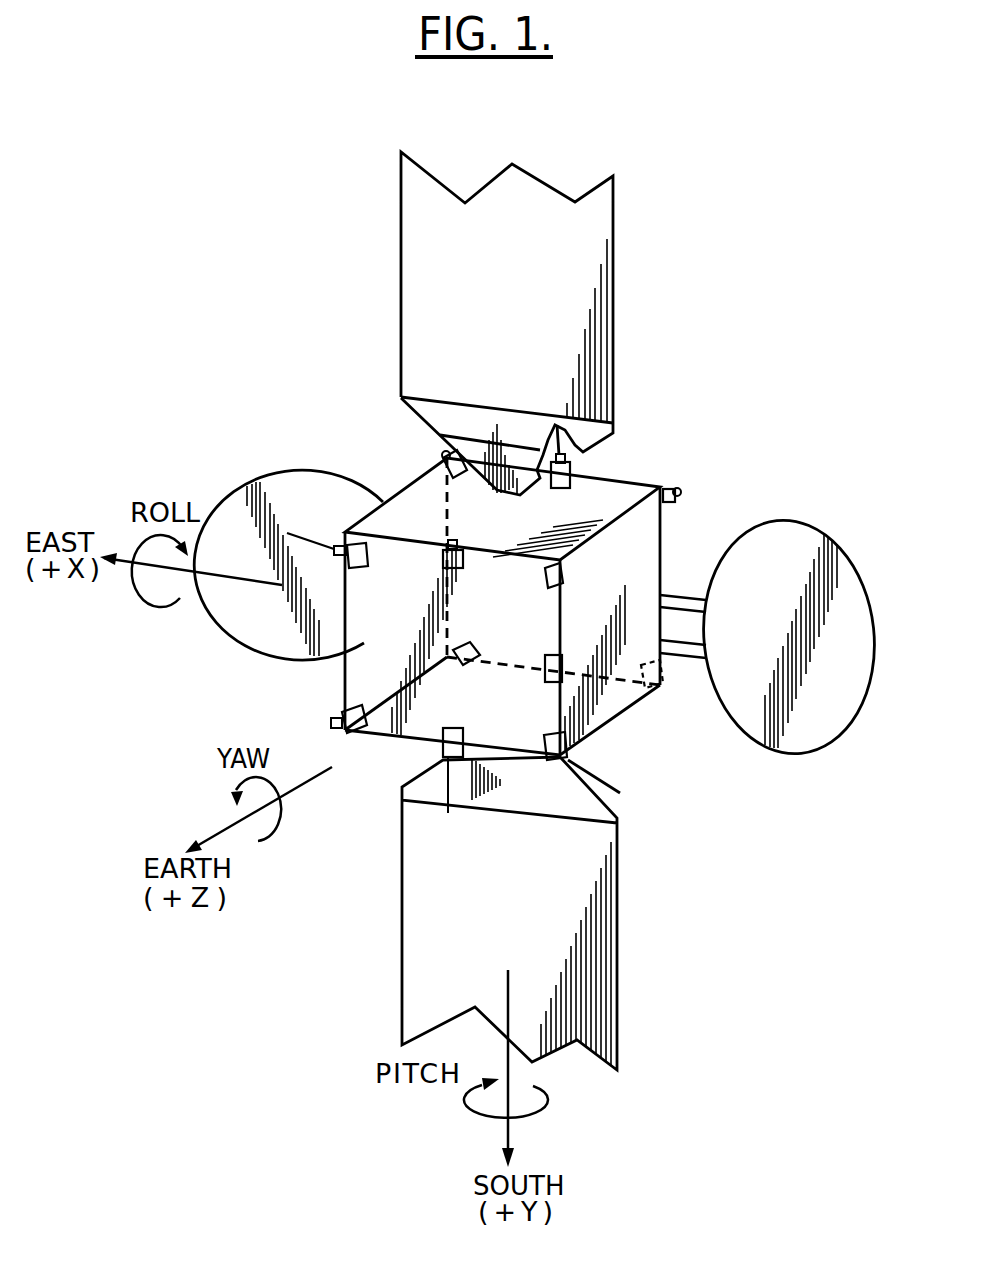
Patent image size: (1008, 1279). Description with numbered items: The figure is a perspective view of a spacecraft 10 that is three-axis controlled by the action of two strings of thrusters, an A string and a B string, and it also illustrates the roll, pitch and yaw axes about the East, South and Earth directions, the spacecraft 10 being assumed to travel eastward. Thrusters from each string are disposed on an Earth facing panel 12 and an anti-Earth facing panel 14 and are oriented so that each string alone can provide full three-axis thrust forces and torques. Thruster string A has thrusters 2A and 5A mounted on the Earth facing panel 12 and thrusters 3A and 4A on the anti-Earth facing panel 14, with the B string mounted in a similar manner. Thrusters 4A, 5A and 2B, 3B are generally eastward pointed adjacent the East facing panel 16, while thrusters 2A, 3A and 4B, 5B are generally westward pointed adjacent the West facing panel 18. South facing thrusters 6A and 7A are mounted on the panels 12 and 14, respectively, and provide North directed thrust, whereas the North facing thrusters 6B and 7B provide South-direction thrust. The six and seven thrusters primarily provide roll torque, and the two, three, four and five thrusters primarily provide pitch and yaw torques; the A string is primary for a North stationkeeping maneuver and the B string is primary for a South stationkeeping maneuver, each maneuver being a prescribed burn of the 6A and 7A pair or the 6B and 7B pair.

The spacecraft 10 is at (668, 417).
The Earth facing panel 12 is at (378, 648).
The anti-Earth facing panel 14 is at (614, 551).
The East facing panel 16 is at (437, 515).
The West facing panel 18 is at (636, 568).
The thruster 2A is at (535, 579).
The thruster 2B is at (473, 641).
The thruster 3A is at (710, 702).
The thruster 3B is at (371, 568).
The thruster 4A is at (432, 458).
The thruster 4B is at (585, 754).
The thruster 5A is at (287, 745).
The thruster 5B is at (720, 467).
The South facing thruster 6A is at (464, 755).
The North facing thruster 6B is at (561, 488).
The South facing thruster 7A is at (574, 659).
The North facing thruster 7B is at (468, 541).